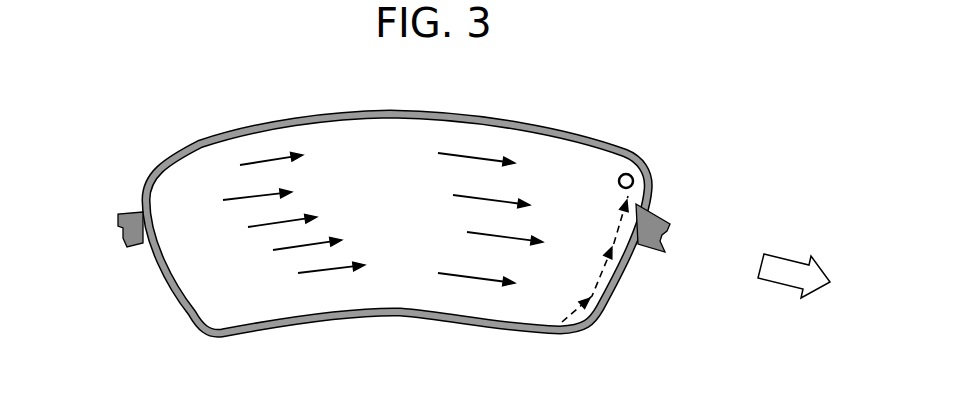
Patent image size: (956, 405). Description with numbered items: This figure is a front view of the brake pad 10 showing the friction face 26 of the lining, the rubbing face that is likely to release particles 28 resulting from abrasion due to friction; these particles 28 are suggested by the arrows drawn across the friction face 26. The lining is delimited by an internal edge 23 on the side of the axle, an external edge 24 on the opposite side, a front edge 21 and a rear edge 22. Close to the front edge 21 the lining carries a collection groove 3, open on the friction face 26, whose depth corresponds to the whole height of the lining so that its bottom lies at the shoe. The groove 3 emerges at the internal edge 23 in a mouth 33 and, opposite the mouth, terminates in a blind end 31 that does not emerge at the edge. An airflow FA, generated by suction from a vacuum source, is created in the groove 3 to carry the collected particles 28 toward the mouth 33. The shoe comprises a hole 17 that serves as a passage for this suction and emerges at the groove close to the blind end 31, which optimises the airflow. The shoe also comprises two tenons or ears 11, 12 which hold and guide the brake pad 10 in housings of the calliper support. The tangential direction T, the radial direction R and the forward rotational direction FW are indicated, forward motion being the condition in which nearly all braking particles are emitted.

The brake pad 10 is at (425, 188).
The collection groove 3 is at (645, 197).
The friction face 26 is at (367, 195).
The tenon 12 is at (117, 222).
The tenon 11 is at (667, 225).
The hole 17 is at (624, 172).
The blind end 31 is at (633, 171).
The front edge 21 is at (627, 257).
The external edge 24 is at (485, 127).
The rear edge 22 is at (175, 290).
The internal edge 23 is at (453, 318).
The particles 28 is at (300, 275).
The airflow FA is at (597, 270).
The mouth 33 is at (563, 328).
The tangential direction T is at (467, 90).
The radial direction R is at (390, 275).
The rotational direction FW is at (792, 286).